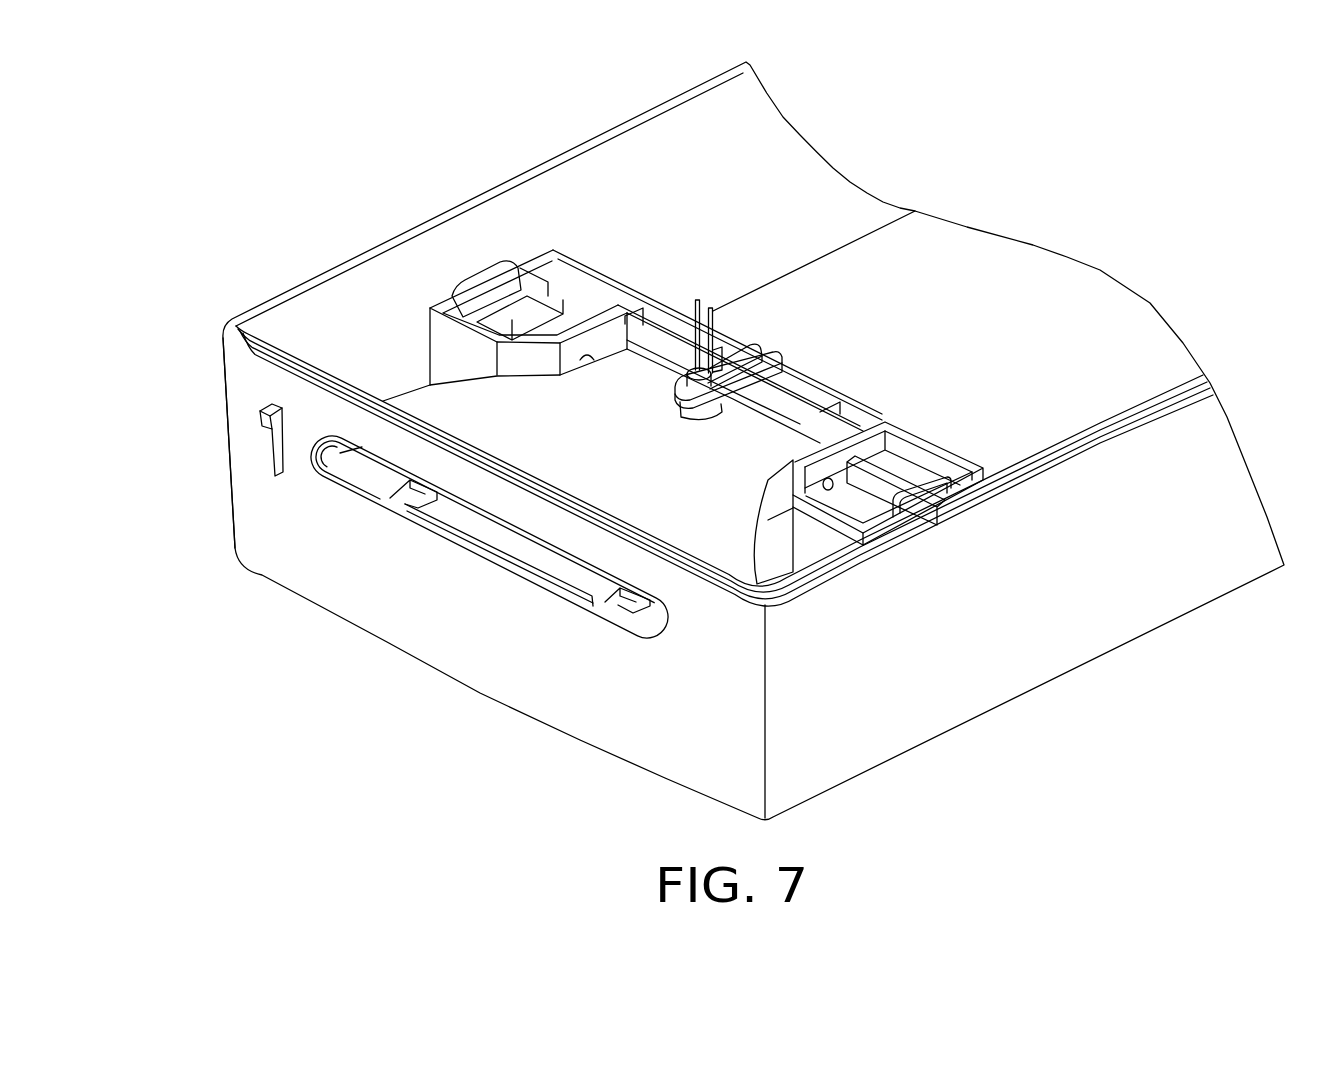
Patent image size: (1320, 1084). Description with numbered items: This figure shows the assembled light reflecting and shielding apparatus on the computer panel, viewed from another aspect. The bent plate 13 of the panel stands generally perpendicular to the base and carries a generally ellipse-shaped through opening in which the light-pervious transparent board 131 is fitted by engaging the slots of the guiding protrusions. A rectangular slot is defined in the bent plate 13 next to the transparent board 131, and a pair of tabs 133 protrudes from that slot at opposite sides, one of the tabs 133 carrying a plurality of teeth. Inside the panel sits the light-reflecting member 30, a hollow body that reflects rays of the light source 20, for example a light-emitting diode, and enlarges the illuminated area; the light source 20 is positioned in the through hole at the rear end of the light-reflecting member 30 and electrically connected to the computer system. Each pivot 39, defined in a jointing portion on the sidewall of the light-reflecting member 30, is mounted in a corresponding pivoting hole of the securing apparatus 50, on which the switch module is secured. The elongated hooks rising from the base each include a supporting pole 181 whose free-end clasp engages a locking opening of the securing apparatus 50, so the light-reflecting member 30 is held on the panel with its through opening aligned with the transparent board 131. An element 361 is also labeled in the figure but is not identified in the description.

The bent plate 13 is at (543, 688).
The transparent board 131 is at (490, 527).
The tabs 133 is at (280, 452).
The latching tab 361 is at (260, 418).
The light-reflecting member 30 is at (407, 388).
The light source 20 is at (525, 265).
The supporting pole 181 is at (473, 293).
The securing apparatus 50 is at (580, 248).
The pivot 39 is at (905, 523).